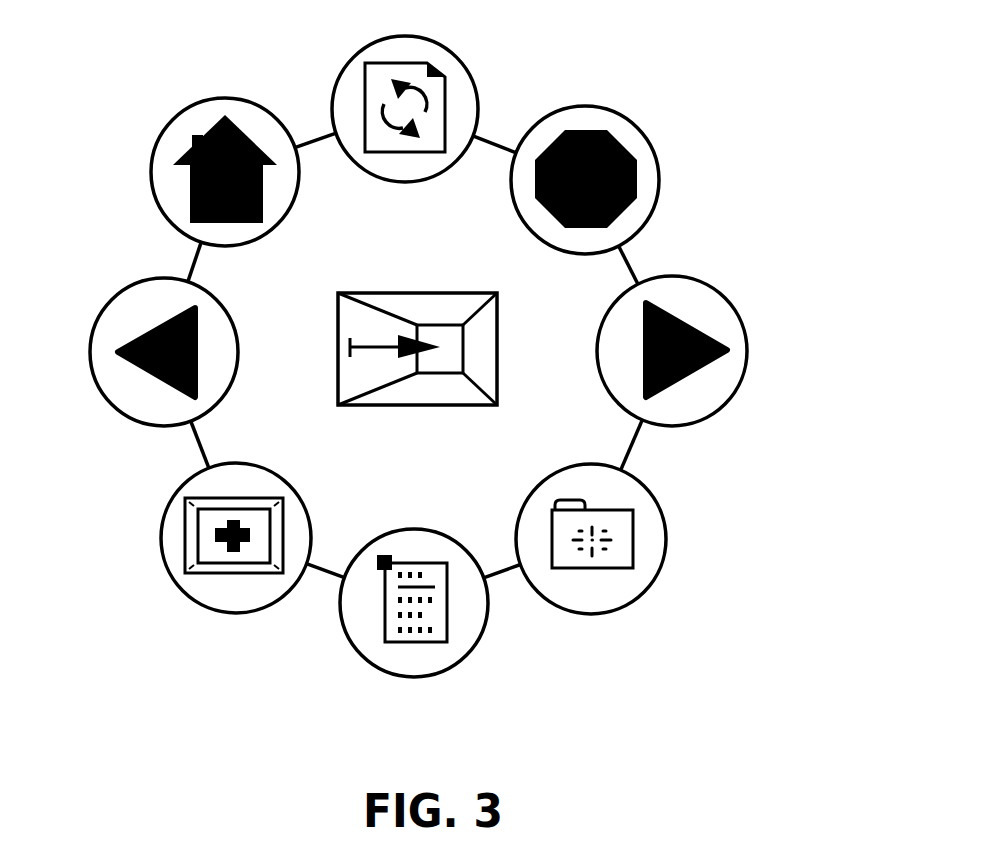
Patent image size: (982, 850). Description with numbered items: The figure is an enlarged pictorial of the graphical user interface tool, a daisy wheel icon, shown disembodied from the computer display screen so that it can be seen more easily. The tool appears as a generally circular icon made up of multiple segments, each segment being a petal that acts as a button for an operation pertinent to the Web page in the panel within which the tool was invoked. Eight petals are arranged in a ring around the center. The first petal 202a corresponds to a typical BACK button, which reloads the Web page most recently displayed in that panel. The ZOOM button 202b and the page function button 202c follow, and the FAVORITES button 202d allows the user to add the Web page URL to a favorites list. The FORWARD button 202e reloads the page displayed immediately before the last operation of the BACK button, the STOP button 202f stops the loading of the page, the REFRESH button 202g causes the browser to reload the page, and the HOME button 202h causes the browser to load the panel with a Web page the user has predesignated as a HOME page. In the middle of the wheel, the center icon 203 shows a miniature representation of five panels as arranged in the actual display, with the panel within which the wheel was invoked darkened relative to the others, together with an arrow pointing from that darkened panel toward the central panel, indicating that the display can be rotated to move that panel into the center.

The first petal 202a is at (83, 350).
The ZOOM button 202b is at (158, 563).
The page function button 202c is at (342, 642).
The FAVORITES button 202d is at (677, 515).
The FORWARD button 202e is at (755, 322).
The STOP button 202f is at (655, 132).
The REFRESH button 202g is at (475, 57).
The HOME button 202h is at (172, 108).
The center icon 203 is at (405, 302).